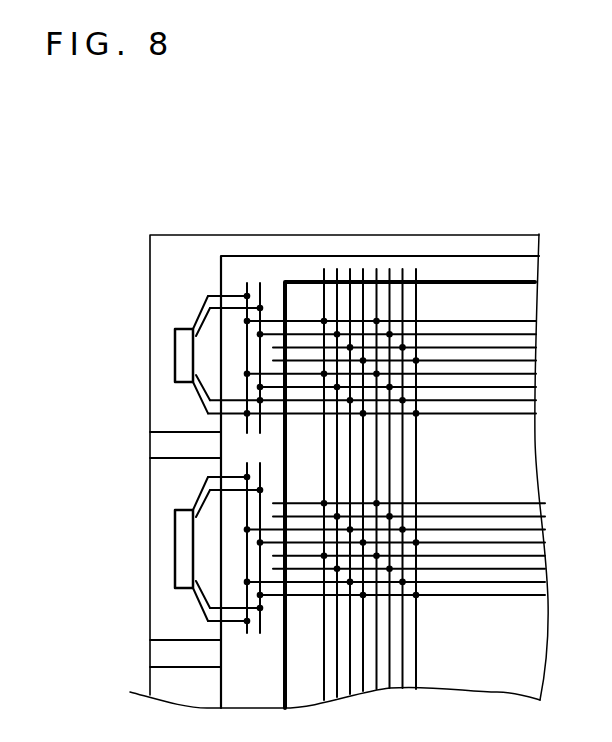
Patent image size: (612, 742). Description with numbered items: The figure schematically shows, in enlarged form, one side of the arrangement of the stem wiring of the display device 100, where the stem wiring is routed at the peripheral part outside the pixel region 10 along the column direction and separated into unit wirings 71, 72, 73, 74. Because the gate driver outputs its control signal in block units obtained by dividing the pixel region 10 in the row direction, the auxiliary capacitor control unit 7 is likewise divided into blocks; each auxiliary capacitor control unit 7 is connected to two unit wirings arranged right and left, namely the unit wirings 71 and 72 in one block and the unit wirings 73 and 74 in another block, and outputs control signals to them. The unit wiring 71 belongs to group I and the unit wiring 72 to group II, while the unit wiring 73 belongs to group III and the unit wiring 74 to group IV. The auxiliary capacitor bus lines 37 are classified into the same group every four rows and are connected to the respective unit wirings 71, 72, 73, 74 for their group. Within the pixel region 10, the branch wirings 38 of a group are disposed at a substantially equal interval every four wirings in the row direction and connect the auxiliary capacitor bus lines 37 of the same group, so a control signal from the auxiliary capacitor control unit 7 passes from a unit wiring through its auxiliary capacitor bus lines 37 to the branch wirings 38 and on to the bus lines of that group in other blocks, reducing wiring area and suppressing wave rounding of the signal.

The display device 100 is at (160, 220).
The pixel region 10 is at (447, 281).
The auxiliary capacitor control unit 7 is at (175, 353).
The unit wiring 71 is at (245, 335).
The unit wiring 72 is at (263, 347).
The unit wiring 73 is at (258, 553).
The unit wiring 74 is at (247, 547).
The auxiliary capacitor bus line 37 is at (313, 332).
The branch wiring 38 is at (378, 277).